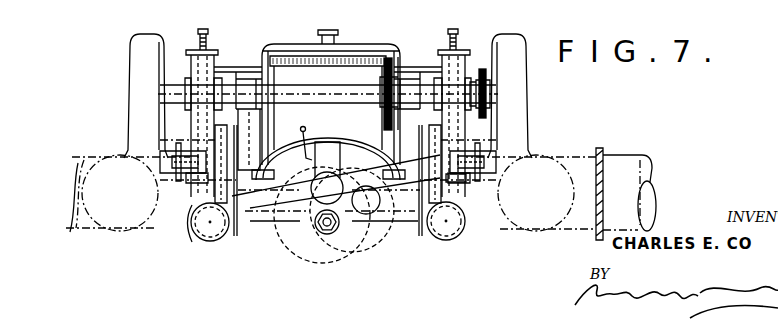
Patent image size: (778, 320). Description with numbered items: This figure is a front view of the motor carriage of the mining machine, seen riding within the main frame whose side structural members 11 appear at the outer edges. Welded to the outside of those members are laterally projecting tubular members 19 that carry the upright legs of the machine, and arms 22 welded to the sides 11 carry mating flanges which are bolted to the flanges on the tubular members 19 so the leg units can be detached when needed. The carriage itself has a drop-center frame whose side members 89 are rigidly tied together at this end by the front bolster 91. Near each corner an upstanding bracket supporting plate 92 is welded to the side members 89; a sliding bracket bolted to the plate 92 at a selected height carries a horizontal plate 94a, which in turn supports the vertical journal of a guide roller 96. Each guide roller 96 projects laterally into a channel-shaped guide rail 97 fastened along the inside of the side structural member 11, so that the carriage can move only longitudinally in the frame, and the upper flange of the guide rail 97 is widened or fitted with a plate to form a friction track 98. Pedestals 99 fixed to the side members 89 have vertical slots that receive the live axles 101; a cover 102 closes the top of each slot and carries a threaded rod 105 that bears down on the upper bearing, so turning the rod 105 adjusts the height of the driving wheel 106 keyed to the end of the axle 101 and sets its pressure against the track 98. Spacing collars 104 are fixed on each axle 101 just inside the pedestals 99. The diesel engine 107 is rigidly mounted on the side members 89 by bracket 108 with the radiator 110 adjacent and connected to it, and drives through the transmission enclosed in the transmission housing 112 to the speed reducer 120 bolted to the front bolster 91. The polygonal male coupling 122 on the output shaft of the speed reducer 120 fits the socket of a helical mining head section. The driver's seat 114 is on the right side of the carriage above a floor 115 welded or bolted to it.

The side structural member 11 is at (137, 232).
The tubular member 19 is at (604, 157).
The arm 22 is at (595, 236).
The side member 89 is at (207, 232).
The front bolster 91 is at (394, 244).
The bracket supporting plate 92 is at (222, 142).
The horizontal plate 94a is at (458, 178).
The guide roller 96 is at (158, 166).
The guide rail 97 is at (160, 173).
The friction track 98 is at (121, 158).
The pedestal 99 is at (196, 70).
The live axle 101 is at (173, 94).
The cover 102 is at (189, 49).
The spacing collar 104 is at (236, 134).
The threaded rod 105 is at (203, 31).
The driving wheel 106 is at (145, 41).
The diesel engine 107 is at (328, 70).
The bracket 108 is at (247, 208).
The radiator 110 is at (350, 40).
The transmission housing 112 is at (286, 247).
The driver's seat 114 is at (219, 82).
The floor 115 is at (188, 215).
The speed reducer 120 is at (378, 242).
The male coupling 122 is at (333, 232).